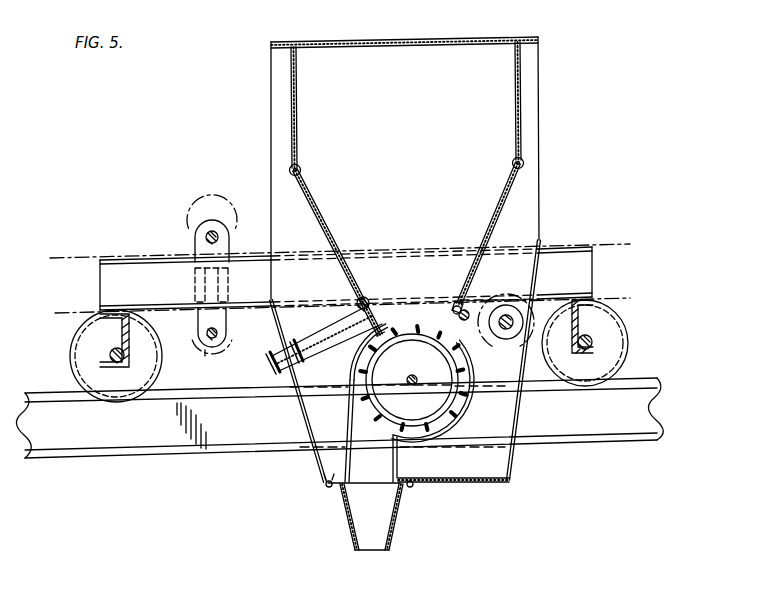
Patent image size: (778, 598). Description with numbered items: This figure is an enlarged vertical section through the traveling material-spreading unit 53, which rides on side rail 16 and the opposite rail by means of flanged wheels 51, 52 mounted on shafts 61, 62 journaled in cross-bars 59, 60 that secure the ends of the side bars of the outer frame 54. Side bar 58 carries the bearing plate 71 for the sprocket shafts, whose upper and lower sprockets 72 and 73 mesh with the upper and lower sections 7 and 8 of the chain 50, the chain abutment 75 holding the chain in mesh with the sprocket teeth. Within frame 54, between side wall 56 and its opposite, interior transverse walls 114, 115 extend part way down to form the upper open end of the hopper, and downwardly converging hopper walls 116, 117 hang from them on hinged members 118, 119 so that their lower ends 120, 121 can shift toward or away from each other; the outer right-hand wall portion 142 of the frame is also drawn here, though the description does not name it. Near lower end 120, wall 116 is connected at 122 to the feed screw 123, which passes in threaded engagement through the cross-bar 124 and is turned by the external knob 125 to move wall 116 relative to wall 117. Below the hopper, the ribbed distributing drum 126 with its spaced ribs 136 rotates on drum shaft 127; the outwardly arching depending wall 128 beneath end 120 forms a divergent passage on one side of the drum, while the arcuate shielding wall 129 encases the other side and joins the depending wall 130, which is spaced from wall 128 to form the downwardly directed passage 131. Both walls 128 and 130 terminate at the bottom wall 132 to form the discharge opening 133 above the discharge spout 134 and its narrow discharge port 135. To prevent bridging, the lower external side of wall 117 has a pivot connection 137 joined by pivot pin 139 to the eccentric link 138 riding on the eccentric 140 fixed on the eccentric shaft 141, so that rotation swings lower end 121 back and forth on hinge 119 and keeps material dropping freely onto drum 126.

The upper section of chain 7 is at (88, 257).
The lower section of chain 8 is at (73, 312).
The side rail 16 is at (648, 423).
The chain 50 is at (96, 261).
The flanged wheel 51 is at (72, 380).
The flanged wheel 52 is at (625, 368).
The material-spreading unit 53 is at (269, 47).
The outer frame 54 is at (274, 117).
The side wall 56 is at (485, 44).
The side bar 58 is at (578, 266).
The cross-bar 59 is at (117, 369).
The cross-bar 60 is at (597, 348).
The shaft 61 is at (115, 352).
The shaft 62 is at (590, 340).
The bearing plate 71 is at (226, 216).
The upper sprocket 72 is at (192, 223).
The lower sprocket 73 is at (202, 355).
The chain abutment 75 is at (230, 271).
The interior transverse wall 114 is at (297, 95).
The interior transverse wall 115 is at (515, 105).
The hopper wall 116 is at (328, 216).
The hopper wall 117 is at (490, 218).
The hinged member 118 is at (302, 169).
The hinged member 119 is at (513, 163).
The lower end of hopper wall 120 is at (386, 293).
The lower end of hopper wall 121 is at (393, 306).
The connection 122 is at (360, 330).
The feed screw 123 is at (313, 352).
The cross-bar 124 is at (300, 340).
The knob 125 is at (270, 360).
The distributing drum 126 is at (374, 412).
The drum shaft 127 is at (420, 382).
The depending wall 128 is at (343, 421).
The shielding wall 129 is at (464, 399).
The depending wall 130 is at (398, 462).
The passage 131 is at (357, 462).
The bottom wall 132 is at (450, 483).
The discharge opening 133 is at (372, 470).
The discharge spout 134 is at (348, 510).
The discharge port 135 is at (370, 548).
The rib 136 is at (447, 428).
The pivot connection 137 is at (461, 306).
The eccentric link 138 is at (494, 296).
The pivot pin 139 is at (505, 285).
The eccentric 140 is at (490, 328).
The eccentric shaft 141 is at (506, 342).
The hopper right outer wall 142 is at (542, 70).